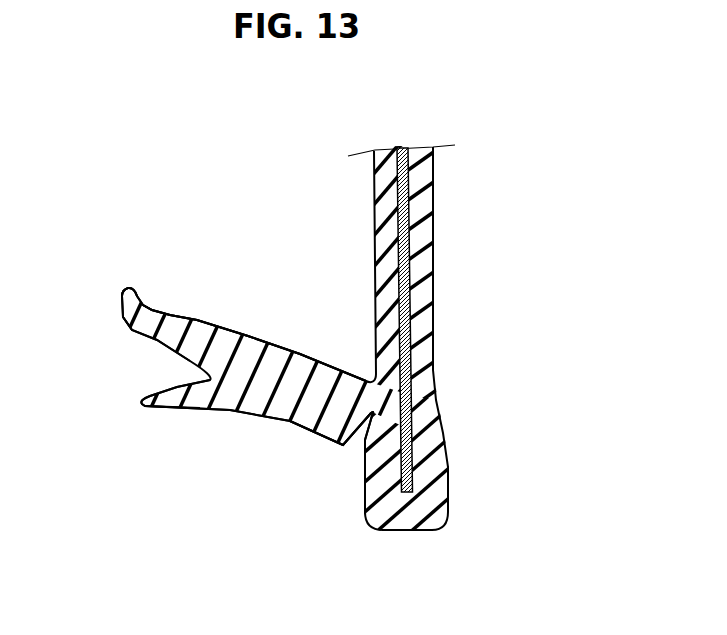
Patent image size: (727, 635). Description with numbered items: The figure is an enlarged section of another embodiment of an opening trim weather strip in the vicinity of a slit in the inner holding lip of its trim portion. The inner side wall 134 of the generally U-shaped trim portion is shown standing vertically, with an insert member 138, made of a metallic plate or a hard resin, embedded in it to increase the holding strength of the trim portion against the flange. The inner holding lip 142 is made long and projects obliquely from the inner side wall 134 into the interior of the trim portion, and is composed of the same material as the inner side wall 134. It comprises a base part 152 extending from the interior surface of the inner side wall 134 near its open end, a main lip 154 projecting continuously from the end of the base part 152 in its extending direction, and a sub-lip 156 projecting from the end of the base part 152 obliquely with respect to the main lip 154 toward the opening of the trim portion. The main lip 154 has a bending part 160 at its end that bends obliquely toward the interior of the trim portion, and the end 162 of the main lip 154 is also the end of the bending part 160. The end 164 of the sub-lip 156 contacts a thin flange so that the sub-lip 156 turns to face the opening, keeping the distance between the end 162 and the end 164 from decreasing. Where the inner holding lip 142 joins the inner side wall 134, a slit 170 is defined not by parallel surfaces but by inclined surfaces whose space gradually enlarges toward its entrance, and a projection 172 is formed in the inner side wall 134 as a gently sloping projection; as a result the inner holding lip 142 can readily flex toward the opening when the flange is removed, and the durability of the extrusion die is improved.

The inner side wall 134 is at (347, 360).
The insert member 138 is at (485, 320).
The inner holding lip 142 is at (244, 295).
The base part 152 is at (238, 393).
The main lip 154 is at (254, 299).
The sub-lip 156 is at (244, 459).
The bending part 160 is at (165, 273).
The end of the main lip 162 is at (106, 255).
The end of the sub-lip 164 is at (149, 447).
The slit 170 is at (313, 501).
The projection 172 is at (349, 501).